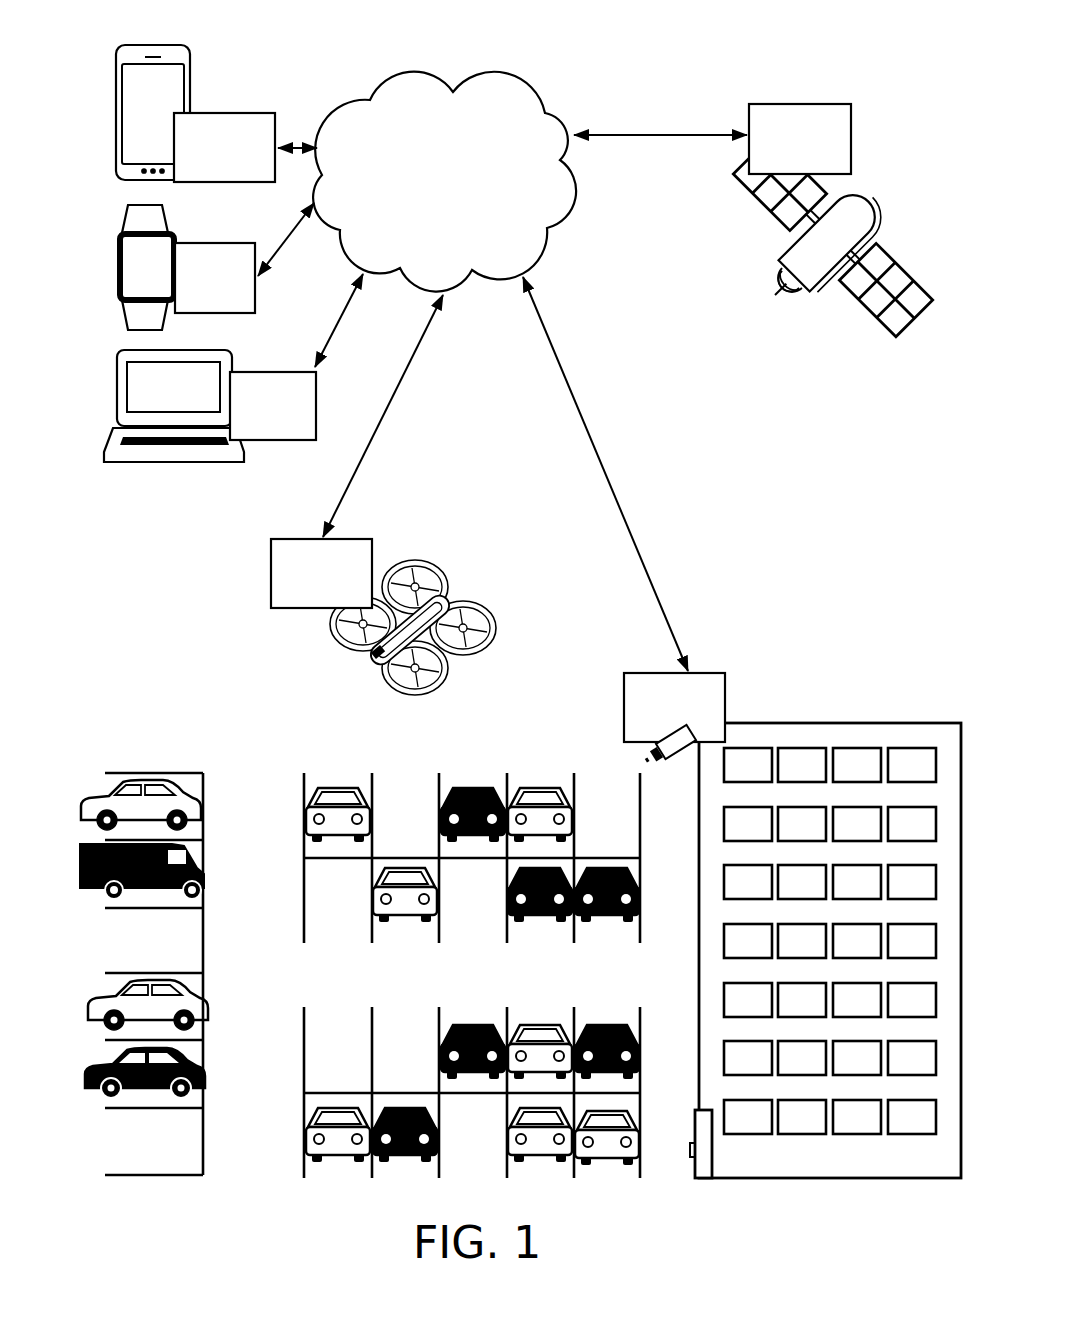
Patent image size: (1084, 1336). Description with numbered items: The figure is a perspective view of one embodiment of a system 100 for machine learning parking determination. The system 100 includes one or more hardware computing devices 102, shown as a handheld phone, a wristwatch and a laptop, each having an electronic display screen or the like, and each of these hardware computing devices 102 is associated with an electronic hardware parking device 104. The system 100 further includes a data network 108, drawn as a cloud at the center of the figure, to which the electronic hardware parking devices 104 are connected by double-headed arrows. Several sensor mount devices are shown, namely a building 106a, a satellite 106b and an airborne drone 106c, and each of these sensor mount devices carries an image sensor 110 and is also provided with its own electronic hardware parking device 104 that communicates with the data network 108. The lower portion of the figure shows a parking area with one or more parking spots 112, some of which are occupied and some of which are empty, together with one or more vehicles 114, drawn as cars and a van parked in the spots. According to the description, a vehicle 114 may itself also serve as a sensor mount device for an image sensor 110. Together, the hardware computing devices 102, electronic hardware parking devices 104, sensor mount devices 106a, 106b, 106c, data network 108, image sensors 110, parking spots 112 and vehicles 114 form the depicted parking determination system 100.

The system 100 is at (124, 33).
The hardware computing device 102 is at (115, 96).
The electronic hardware parking device 104 is at (512, 423).
The building 106a is at (745, 727).
The satellite 106b is at (907, 190).
The airborne drone 106c is at (445, 582).
The data network 108 is at (444, 182).
The image sensor 110 is at (783, 269).
The parking spot 112 is at (417, 787).
The vehicle 114 is at (346, 790).